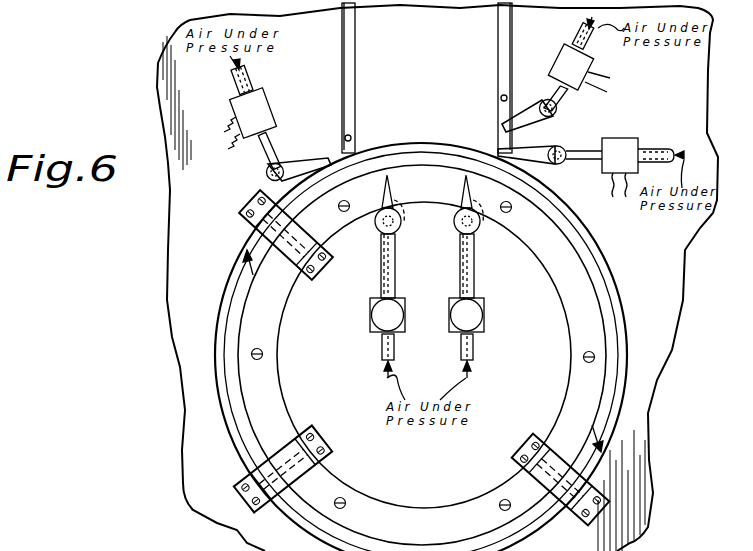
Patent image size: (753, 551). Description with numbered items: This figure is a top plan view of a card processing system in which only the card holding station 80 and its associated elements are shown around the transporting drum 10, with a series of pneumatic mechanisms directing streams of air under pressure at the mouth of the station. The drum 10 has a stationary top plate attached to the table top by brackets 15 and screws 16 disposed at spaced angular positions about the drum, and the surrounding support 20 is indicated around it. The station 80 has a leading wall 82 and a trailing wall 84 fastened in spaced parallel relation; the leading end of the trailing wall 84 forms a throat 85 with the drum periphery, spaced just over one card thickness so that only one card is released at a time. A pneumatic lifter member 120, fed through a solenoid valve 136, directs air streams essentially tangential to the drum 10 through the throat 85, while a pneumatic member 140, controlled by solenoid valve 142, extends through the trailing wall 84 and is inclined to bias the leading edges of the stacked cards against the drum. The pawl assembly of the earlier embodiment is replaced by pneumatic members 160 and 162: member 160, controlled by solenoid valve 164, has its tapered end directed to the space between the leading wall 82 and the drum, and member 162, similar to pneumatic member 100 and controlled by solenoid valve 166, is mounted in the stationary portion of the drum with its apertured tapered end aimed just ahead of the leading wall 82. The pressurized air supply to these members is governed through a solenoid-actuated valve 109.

The transporting drum 10 is at (428, 489).
The brackets 15 is at (272, 228).
The screws 16 is at (249, 206).
The ground / support 20 is at (437, 278).
The card holding station 80 is at (444, 77).
The leading wall 82 is at (349, 44).
The trailing wall 84 is at (508, 49).
The throat 85 is at (493, 150).
The pneumatic member 100 is at (482, 212).
The solenoid-actuated valve 109 is at (475, 322).
The pneumatic lifter member 120 is at (530, 144).
The solenoid valve 136 is at (629, 147).
The pneumatic member 140 is at (553, 125).
The solenoid valve 142 is at (567, 61).
The pneumatic member 160 is at (322, 140).
The pneumatic member 162 is at (405, 206).
The solenoid valve 164 is at (253, 110).
The solenoid valve 166 is at (383, 322).